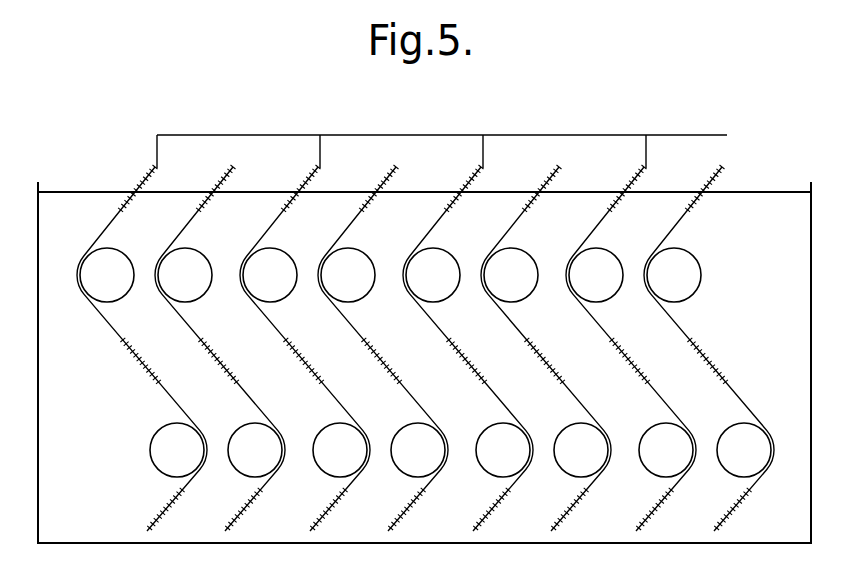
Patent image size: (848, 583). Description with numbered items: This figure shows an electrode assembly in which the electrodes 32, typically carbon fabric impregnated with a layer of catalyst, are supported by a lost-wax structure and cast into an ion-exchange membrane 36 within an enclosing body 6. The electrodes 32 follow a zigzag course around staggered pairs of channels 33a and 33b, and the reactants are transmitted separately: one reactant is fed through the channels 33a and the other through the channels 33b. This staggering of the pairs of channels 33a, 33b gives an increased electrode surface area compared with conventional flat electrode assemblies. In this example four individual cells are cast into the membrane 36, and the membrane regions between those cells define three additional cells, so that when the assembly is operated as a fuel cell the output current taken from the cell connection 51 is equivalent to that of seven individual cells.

The housing 6 is at (754, 238).
The cell connection 51 is at (398, 135).
The electrode 32 is at (222, 184).
The channel 33a is at (168, 285).
The channel 33b is at (90, 285).
The cast ion-exchange membrane 36 is at (130, 332).